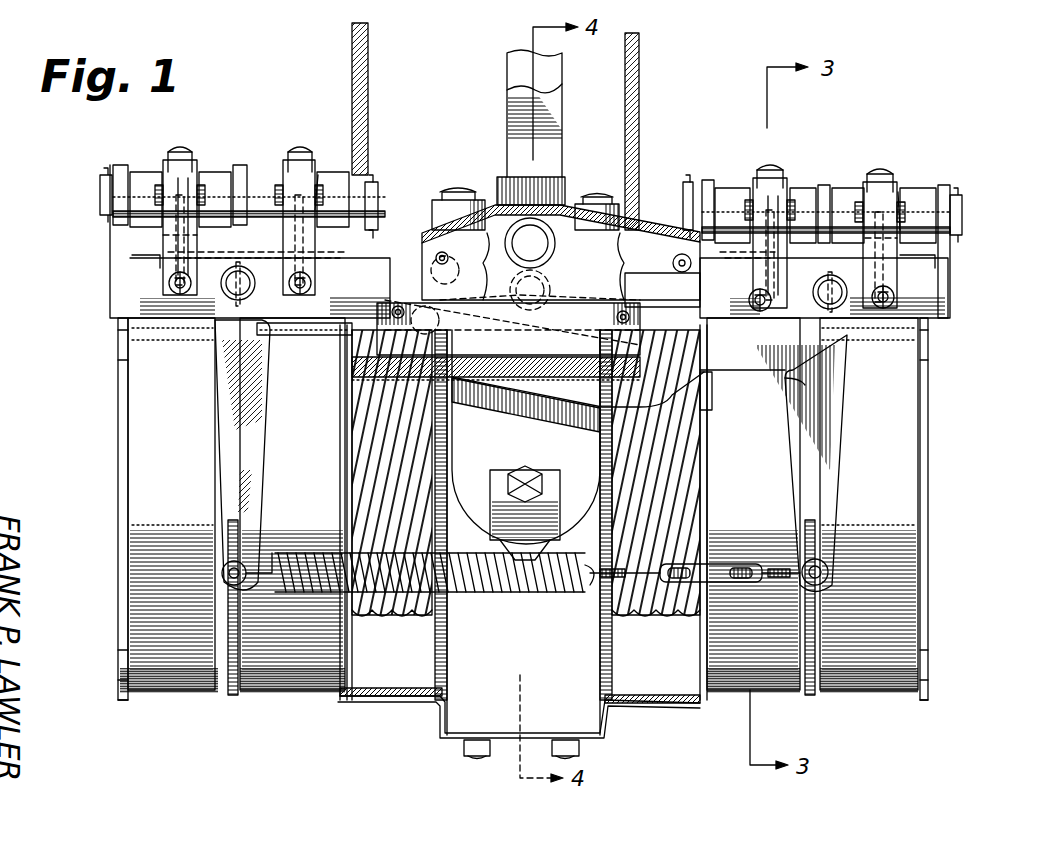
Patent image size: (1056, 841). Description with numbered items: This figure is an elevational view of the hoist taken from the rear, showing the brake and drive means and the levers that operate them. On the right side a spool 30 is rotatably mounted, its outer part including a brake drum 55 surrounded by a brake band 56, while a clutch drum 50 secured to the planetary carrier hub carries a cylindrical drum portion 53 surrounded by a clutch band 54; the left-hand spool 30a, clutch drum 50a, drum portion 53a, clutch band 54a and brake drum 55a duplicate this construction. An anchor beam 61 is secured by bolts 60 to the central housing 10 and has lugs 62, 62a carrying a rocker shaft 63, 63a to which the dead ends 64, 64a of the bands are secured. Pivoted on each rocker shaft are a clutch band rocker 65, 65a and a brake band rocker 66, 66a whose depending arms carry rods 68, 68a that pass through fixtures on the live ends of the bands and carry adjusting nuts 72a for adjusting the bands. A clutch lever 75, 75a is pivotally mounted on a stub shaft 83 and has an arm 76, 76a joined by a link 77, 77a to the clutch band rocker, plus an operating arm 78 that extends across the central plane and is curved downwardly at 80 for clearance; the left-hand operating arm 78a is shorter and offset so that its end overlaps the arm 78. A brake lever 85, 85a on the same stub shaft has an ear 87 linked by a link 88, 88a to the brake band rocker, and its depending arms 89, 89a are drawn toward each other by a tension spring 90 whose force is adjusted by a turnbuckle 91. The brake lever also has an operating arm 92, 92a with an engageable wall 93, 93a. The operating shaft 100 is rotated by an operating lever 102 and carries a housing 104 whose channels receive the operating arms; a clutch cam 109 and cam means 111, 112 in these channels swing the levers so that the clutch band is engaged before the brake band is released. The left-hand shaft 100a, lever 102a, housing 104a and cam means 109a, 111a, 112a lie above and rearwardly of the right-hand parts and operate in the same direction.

The central housing 10 is at (526, 445).
The spool 30 is at (648, 615).
The spool 30a is at (432, 605).
The clutch drum 50 is at (928, 512).
The clutch drum 50a is at (118, 580).
The cylindrical drum portion 53 is at (928, 448).
The cylindrical drum portion 53a is at (122, 482).
The clutch band 54 is at (900, 398).
The clutch band 54a is at (148, 388).
The brake drum 55 is at (808, 698).
The brake drum 55a is at (235, 702).
The brake band 56 is at (285, 695).
The bolts 60 is at (458, 195).
The anchor beam 61 is at (110, 295).
The lugs 62 is at (706, 180).
The lugs 62a is at (120, 165).
The rocker shaft 63 is at (962, 205).
The rocker shaft 63a is at (98, 185).
The dead ends 64 is at (730, 195).
The dead ends 64a is at (143, 178).
The clutch band rocker 65 is at (897, 195).
The clutch band rocker 65a is at (292, 185).
The brake band rocker 66 is at (775, 195).
The brake band rocker 66a is at (186, 195).
The rods 68 is at (768, 165).
The rods 68a is at (182, 150).
The adjusting nuts 72a is at (170, 160).
The clutch lever 75 is at (596, 392).
The clutch lever 75a is at (208, 300).
The arm 76 is at (950, 278).
The arm 76a is at (135, 265).
The link 77 is at (940, 252).
The link 77a is at (170, 240).
The operating arm 78 is at (556, 385).
The operating arm 78a is at (505, 272).
The downward curve 80 is at (528, 382).
The stub shaft 83 is at (815, 305).
The brake lever 85 is at (785, 385).
The brake lever 85a is at (280, 325).
The ear 87 is at (757, 308).
The link 88 is at (760, 250).
The link 88a is at (310, 260).
The depending arm 89 is at (822, 490).
The depending arm 89a is at (240, 436).
The tension spring 90 is at (485, 542).
The turnbuckle 91 is at (735, 560).
The operating arm 92 is at (708, 403).
The operating arm 92a is at (662, 290).
The engageable wall 93 is at (540, 321).
The engageable wall 93a is at (672, 268).
The operating shaft 100 is at (540, 300).
The operating shaft 100a is at (542, 240).
The operating lever 102 is at (520, 66).
The operating lever 102a is at (552, 112).
The housing 104 is at (504, 350).
The housing 104a is at (565, 215).
The clutch cam 109 is at (431, 327).
The clutch cam 109a is at (435, 245).
The cam means 111 is at (397, 327).
The cam means 111a is at (435, 243).
The cam means 112 is at (618, 331).
The cam means 112a is at (683, 235).